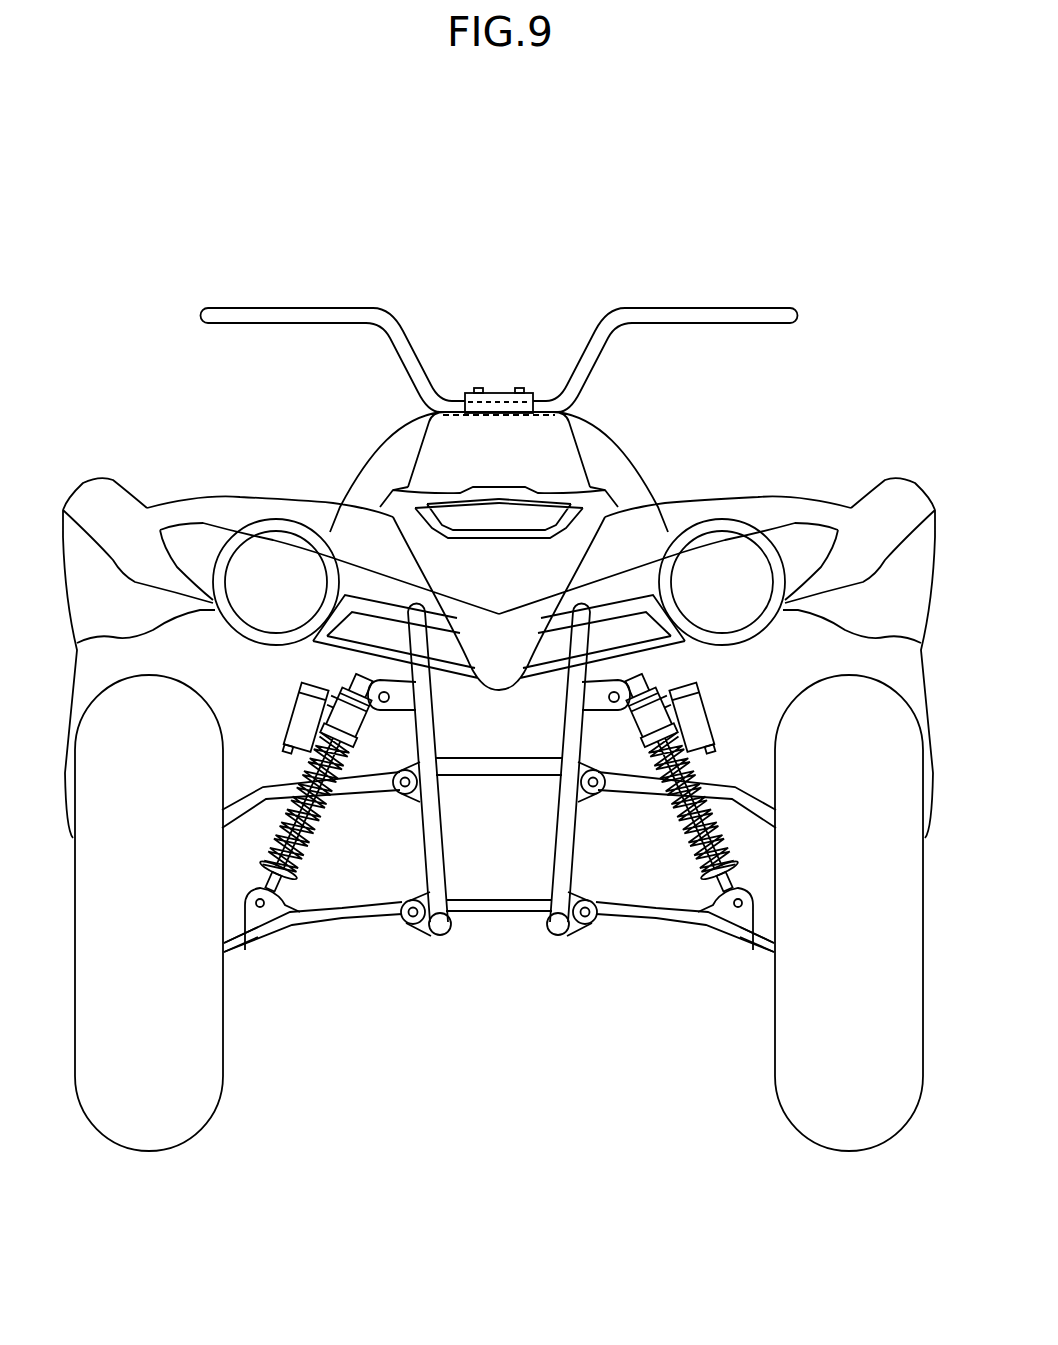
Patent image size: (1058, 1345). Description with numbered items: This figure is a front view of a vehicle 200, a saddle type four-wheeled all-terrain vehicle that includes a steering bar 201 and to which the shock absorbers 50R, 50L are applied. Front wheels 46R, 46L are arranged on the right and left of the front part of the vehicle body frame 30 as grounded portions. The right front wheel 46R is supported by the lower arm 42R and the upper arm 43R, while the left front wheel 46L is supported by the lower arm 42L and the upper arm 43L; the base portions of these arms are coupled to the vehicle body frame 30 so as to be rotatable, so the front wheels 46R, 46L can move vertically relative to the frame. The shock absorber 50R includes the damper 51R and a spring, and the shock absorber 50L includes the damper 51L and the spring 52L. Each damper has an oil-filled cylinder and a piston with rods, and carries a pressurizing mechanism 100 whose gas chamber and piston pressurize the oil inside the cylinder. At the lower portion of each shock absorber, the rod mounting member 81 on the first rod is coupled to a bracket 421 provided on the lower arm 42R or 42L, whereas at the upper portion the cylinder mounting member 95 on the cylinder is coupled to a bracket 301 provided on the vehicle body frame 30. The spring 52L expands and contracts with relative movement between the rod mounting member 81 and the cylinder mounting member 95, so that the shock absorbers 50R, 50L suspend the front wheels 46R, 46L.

The vehicle 200 is at (218, 255).
The steering bar 201 is at (296, 320).
The vehicle body frame 30 is at (500, 908).
The bracket 301 is at (400, 705).
The lower arm 42R is at (363, 917).
The lower arm 42L is at (631, 917).
The bracket 421 is at (258, 924).
The upper arm 43R is at (368, 789).
The upper arm 43L is at (604, 788).
The right front wheel 46R is at (157, 1122).
The left front wheel 46L is at (844, 1122).
The shock absorber 50R is at (290, 702).
The shock absorber 50L is at (708, 707).
The damper 51R is at (338, 716).
The damper 51L is at (661, 717).
The spring 52L is at (700, 847).
The rod mounting member 81 is at (286, 908).
The cylinder mounting member 95 is at (350, 722).
The pressurizing mechanism 100 is at (298, 740).